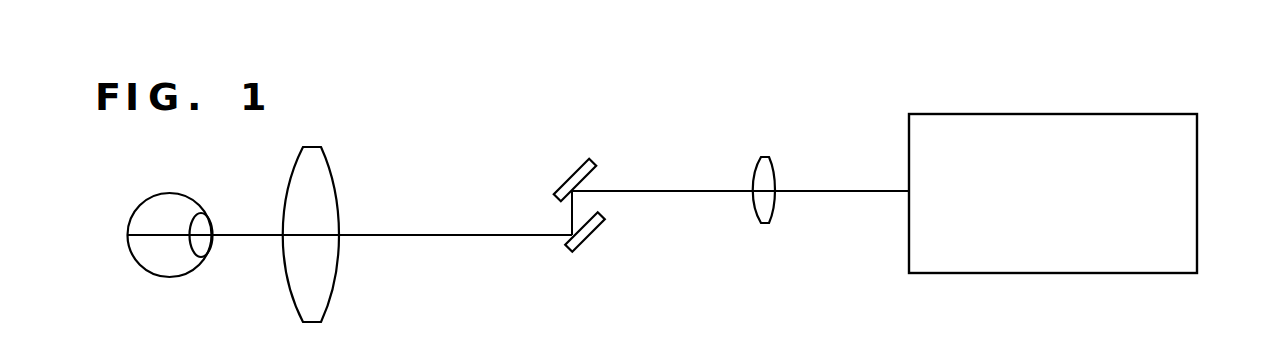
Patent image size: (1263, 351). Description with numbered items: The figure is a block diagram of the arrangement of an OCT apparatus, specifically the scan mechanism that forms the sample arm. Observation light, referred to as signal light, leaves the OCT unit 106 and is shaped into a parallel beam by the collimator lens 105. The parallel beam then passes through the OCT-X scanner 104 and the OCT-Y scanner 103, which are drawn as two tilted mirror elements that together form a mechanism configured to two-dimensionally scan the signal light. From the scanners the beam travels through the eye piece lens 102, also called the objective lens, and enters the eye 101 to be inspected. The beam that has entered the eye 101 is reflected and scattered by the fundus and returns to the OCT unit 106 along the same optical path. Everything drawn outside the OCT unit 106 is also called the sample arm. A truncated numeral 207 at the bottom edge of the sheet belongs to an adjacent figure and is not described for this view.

The eye to be inspected 101 is at (166, 193).
The eye piece lens 102 is at (309, 147).
The OCT-Y scanner 103 is at (587, 247).
The OCT-X scanner 104 is at (583, 160).
The collimator lens 105 is at (765, 157).
The OCT unit 106 is at (1199, 130).
The truncated numeral from adjacent figure 207 is at (175, 347).